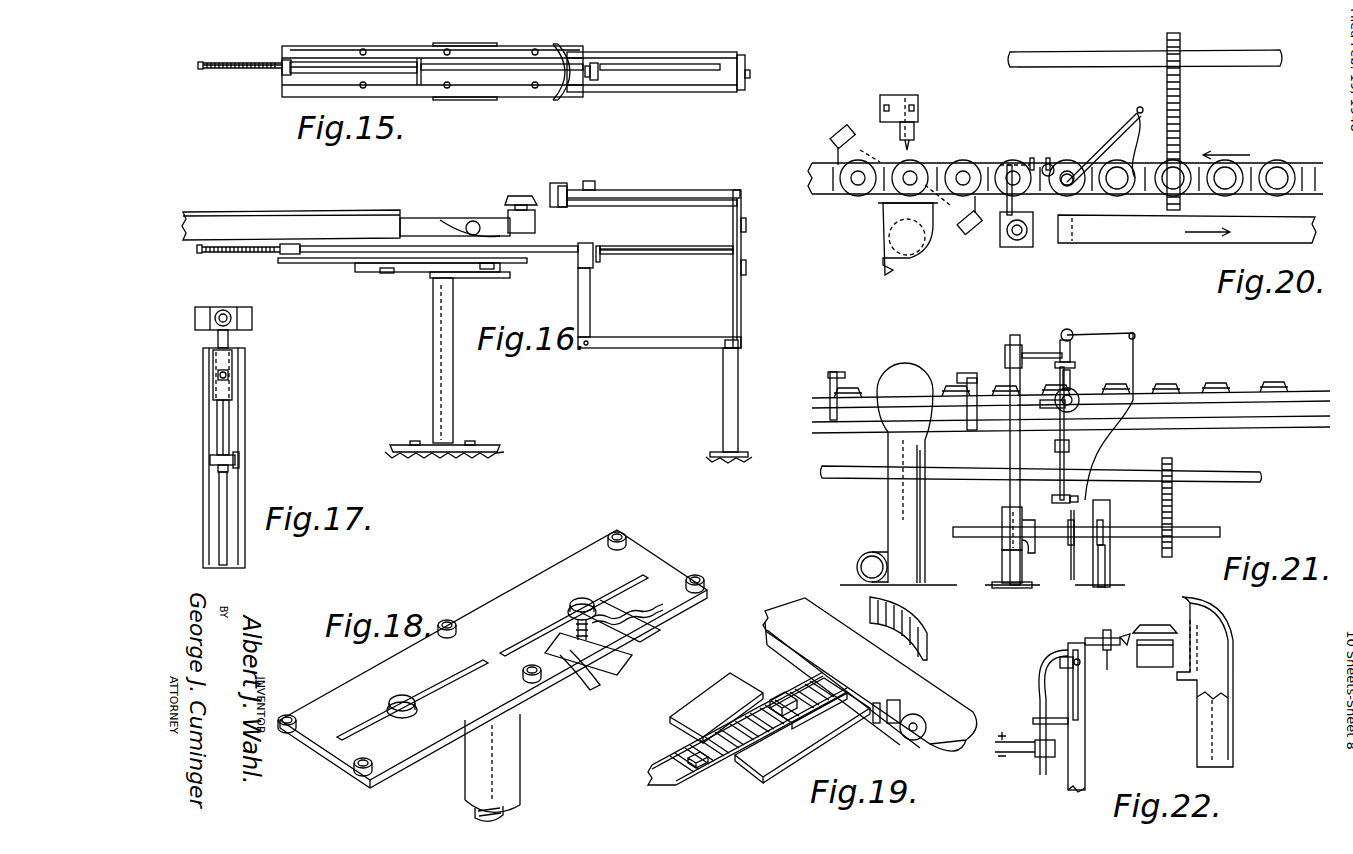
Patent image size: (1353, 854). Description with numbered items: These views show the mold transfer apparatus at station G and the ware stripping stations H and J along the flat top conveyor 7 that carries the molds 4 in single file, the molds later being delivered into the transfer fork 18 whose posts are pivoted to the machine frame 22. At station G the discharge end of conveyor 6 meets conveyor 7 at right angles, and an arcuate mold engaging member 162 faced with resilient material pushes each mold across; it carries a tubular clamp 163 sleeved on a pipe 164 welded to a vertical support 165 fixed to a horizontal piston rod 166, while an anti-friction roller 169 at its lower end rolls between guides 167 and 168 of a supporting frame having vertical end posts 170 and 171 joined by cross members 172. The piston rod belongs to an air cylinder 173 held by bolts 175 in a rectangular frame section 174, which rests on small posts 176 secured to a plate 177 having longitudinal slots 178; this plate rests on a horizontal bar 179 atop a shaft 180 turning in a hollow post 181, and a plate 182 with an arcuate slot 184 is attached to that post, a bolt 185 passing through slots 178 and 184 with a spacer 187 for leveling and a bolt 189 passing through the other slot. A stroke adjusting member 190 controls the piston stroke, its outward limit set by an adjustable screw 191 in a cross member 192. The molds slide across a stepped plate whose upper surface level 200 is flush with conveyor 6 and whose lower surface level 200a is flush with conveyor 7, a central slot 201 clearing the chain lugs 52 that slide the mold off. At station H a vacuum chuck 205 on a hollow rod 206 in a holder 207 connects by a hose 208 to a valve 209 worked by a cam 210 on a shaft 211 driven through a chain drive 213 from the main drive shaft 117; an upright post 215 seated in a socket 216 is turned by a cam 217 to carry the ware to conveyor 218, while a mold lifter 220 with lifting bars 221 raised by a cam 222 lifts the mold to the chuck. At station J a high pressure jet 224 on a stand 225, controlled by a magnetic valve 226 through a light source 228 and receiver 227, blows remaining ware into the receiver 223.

In FIG. 16, the mold 4 is at (512, 193).
In FIG. 20, the mold 4 is at (965, 160).
In FIG. 21, the mold 4 is at (1274, 384).
In FIG. 16, the conveyor 6 is at (536, 220).
In FIG. 19, the conveyor 6 is at (935, 690).
In FIG. 16, the conveyor 7 is at (343, 211).
In FIG. 19, the conveyor 7 is at (672, 752).
In FIG. 20, the conveyor 7 is at (988, 163).
In FIG. 21, the conveyor 7 is at (1071, 402).
In FIG. 16, the transfer fork 18 is at (332, 262).
In FIG. 20, the machine frame 22 is at (883, 130).
In FIG. 19, the chain lug 52 is at (703, 765).
In FIG. 20, the main drive shaft 117 is at (1243, 67).
In FIG. 21, the main drive shaft 117 is at (1246, 470).
In FIG. 15, the arcuate mold engaging member 162 is at (556, 50).
In FIG. 16, the arcuate mold engaging member 162 is at (556, 183).
In FIG. 17, the arcuate mold engaging member 162 is at (252, 313).
In FIG. 19, the arcuate mold engaging member 162 is at (918, 620).
In FIG. 15, the tubular clamp 163 is at (593, 80).
In FIG. 16, the tubular clamp 163 is at (588, 181).
In FIG. 17, the tubular clamp 163 is at (215, 333).
In FIG. 15, the pipe 164 is at (655, 72).
In FIG. 16, the pipe 164 is at (630, 190).
In FIG. 16, the vertical support 165 is at (740, 202).
In FIG. 17, the vertical support 165 is at (214, 342).
In FIG. 16, the horizontal piston rod 166 is at (652, 249).
In FIG. 16, the guide 167 is at (661, 339).
In FIG. 17, the guide 167 is at (239, 460).
In FIG. 17, the guide 168 is at (210, 459).
In FIG. 16, the anti-friction roller 169 is at (746, 344).
In FIG. 17, the anti-friction roller 169 is at (216, 468).
In FIG. 17, the vertical end post 170 is at (203, 520).
In FIG. 15, the vertical end post 171 is at (742, 58).
In FIG. 16, the vertical end post 171 is at (739, 386).
In FIG. 17, the vertical end post 171 is at (246, 483).
In FIG. 15, the cross member 172 is at (742, 92).
In FIG. 16, the cross member 172 is at (747, 240).
In FIG. 17, the cross member 172 is at (233, 392).
In FIG. 15, the air cylinder 173 is at (515, 62).
In FIG. 16, the air cylinder 173 is at (582, 250).
In FIG. 15, the rectangular frame section 174 is at (392, 48).
In FIG. 16, the rectangular frame section 174 is at (338, 246).
In FIG. 15, the bolt 175 is at (405, 86).
In FIG. 16, the small post 176 is at (356, 264).
In FIG. 18, the small post 176 is at (621, 531).
In FIG. 18, the plate 177 is at (655, 575).
In FIG. 18, the longitudinal slot 178 is at (540, 628).
In FIG. 16, the horizontal bar 179 is at (392, 274).
In FIG. 18, the horizontal bar 179 is at (616, 614).
In FIG. 16, the shaft 180 is at (453, 397).
In FIG. 18, the shaft 180 is at (476, 801).
In FIG. 16, the hollow post 181 is at (453, 430).
In FIG. 18, the hollow post 181 is at (465, 773).
In FIG. 15, the plate 182 is at (452, 43).
In FIG. 16, the plate 182 is at (458, 279).
In FIG. 18, the plate 182 is at (634, 654).
In FIG. 18, the arcuate slot 184 is at (600, 670).
In FIG. 16, the bolt 185 is at (492, 270).
In FIG. 18, the bolt 185 is at (584, 597).
In FIG. 18, the spacer 187 is at (652, 617).
In FIG. 16, the bolt 189 is at (395, 274).
In FIG. 18, the bolt 189 is at (388, 700).
In FIG. 15, the stroke adjusting member 190 is at (315, 62).
In FIG. 16, the stroke adjusting member 190 is at (290, 255).
In FIG. 15, the adjustable screw 191 is at (243, 61).
In FIG. 16, the adjustable screw 191 is at (201, 254).
In FIG. 15, the cross member 192 is at (282, 72).
In FIG. 19, the upper surface level 200 is at (857, 712).
In FIG. 19, the lower surface level 200a is at (788, 754).
In FIG. 19, the slot 201 is at (793, 693).
In FIG. 20, the vacuum chuck 205 is at (1047, 164).
In FIG. 21, the vacuum chuck 205 is at (1076, 386).
In FIG. 21, the hollow rod 206 is at (1070, 329).
In FIG. 21, the holder 207 is at (1071, 352).
In FIG. 20, the hose 208 is at (1150, 110).
In FIG. 21, the hose 208 is at (1136, 352).
In FIG. 21, the valve 209 is at (1111, 508).
In FIG. 21, the cam 210 is at (1110, 550).
In FIG. 21, the shaft 211 is at (1180, 528).
In FIG. 20, the chain drive 213 is at (1181, 125).
In FIG. 21, the chain drive 213 is at (1173, 465).
In FIG. 20, the upright post 215 is at (1022, 247).
In FIG. 21, the upright post 215 is at (1009, 445).
In FIG. 21, the socket 216 is at (1001, 566).
In FIG. 20, the cam 217 is at (1030, 160).
In FIG. 21, the cam 217 is at (1071, 545).
In FIG. 20, the conveyor 218 is at (1172, 243).
In FIG. 21, the mold lifter 220 is at (1067, 446).
In FIG. 20, the lifting bar 221 is at (1069, 166).
In FIG. 21, the cam 222 is at (1048, 408).
In FIG. 20, the receiver 223 is at (883, 228).
In FIG. 21, the receiver 223 is at (912, 375).
In FIG. 22, the receiver 223 is at (1234, 640).
In FIG. 20, the high pressure jet 224 is at (913, 122).
In FIG. 22, the high pressure jet 224 is at (1095, 637).
In FIG. 22, the stand 225 is at (1086, 717).
In FIG. 22, the magnetic valve 226 is at (1040, 755).
In FIG. 20, the receiver 227 is at (850, 127).
In FIG. 20, the light source 228 is at (974, 230).
In FIG. 19, the station G is at (944, 657).
In FIG. 20, the station H is at (1064, 130).
In FIG. 21, the station H is at (1036, 339).
In FIG. 20, the station J is at (947, 129).
In FIG. 21, the station J is at (909, 354).
In FIG. 22, the station J is at (1163, 619).